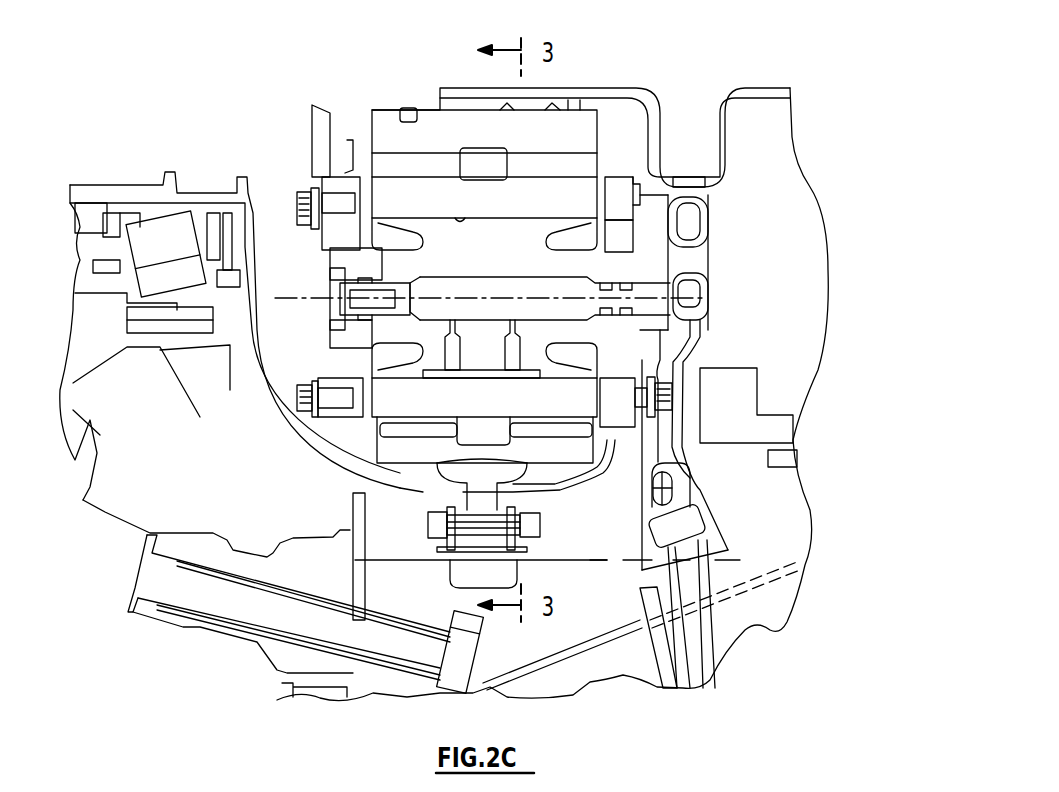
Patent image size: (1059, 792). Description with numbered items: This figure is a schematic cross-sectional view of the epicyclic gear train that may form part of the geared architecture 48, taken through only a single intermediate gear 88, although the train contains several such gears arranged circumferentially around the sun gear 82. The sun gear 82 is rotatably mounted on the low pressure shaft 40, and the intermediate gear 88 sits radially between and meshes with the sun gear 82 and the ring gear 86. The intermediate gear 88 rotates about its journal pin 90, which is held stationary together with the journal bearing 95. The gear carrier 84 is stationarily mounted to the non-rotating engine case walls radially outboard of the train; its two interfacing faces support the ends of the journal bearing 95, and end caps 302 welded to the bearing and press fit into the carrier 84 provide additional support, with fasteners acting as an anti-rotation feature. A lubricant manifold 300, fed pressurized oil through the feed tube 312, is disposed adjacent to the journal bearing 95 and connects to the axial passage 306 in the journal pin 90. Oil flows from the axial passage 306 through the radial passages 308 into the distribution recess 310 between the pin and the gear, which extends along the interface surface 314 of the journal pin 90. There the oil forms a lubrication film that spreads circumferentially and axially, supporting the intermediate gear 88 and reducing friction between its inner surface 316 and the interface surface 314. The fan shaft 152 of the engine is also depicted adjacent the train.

The low pressure shaft 40 is at (755, 90).
The geared architecture 48 is at (318, 80).
The sun gear 82 is at (390, 120).
The carrier 84 is at (338, 182).
The ring gear 86 is at (550, 465).
The intermediate gear 88 is at (580, 206).
The journal pin 90 is at (378, 200).
The journal bearing 95 is at (495, 261).
The fan shaft 152 is at (227, 193).
The lubricant manifold 300 is at (718, 273).
The end caps 302 is at (330, 238).
The axial passage 306 is at (400, 306).
The radial passages 308 is at (450, 362).
The distribution recess 310 is at (507, 365).
The feed tube 312 is at (727, 623).
The interface surface 314 is at (463, 218).
The inner surface 316 is at (540, 217).